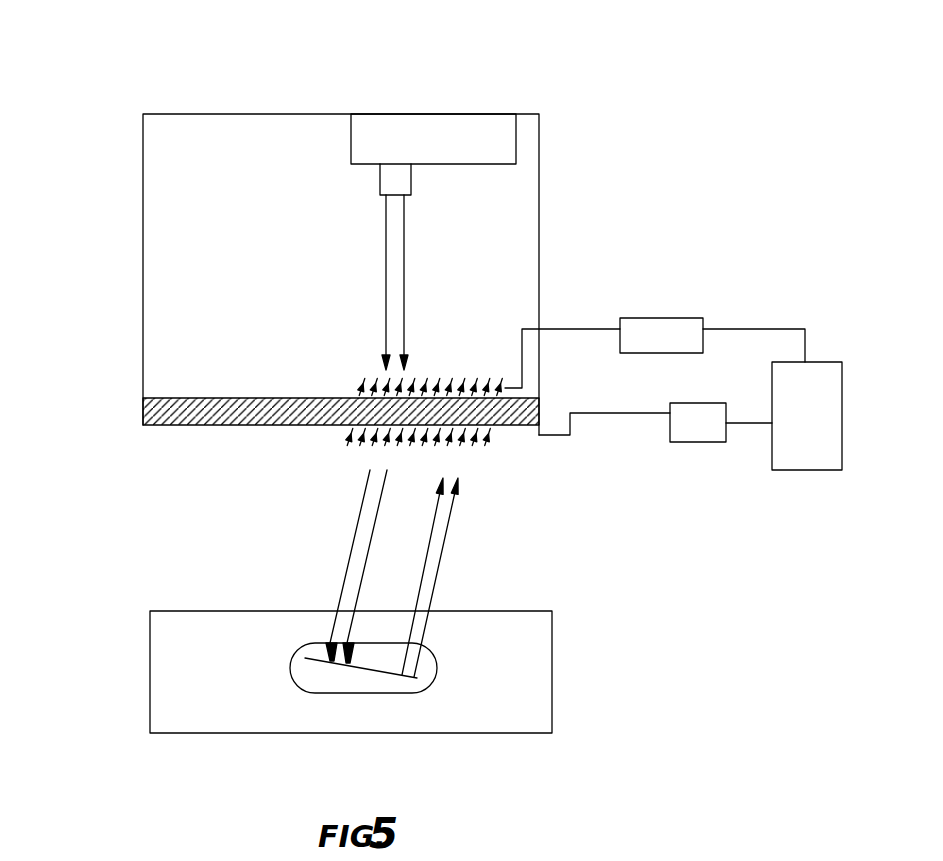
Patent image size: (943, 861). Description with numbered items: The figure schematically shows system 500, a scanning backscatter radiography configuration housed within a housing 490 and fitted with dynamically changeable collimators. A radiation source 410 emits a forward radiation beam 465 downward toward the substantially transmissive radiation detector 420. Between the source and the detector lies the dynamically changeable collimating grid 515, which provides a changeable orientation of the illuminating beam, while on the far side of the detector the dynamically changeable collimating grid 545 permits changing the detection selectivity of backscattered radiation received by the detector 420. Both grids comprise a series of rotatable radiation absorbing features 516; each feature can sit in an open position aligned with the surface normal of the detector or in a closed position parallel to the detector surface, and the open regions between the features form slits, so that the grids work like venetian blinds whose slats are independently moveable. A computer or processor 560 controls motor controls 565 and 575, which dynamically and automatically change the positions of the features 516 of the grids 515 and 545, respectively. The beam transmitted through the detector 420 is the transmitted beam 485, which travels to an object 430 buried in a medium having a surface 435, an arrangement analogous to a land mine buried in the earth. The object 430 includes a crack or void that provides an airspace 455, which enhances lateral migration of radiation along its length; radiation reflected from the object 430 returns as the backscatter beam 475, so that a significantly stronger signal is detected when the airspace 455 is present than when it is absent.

The system 500 is at (118, 46).
The housing 490 is at (143, 282).
The radiation source 410 is at (517, 151).
The forward radiation beam 465 is at (386, 280).
The substantially transmissive radiation detector 420 is at (539, 408).
The dynamically changeable collimating grid 515 is at (345, 387).
The radiation absorbing features 516 is at (348, 428).
The motor control 565 is at (648, 318).
The computer or processor 560 is at (826, 362).
The motor control 575 is at (690, 445).
The dynamically changeable collimating grid 545 is at (550, 455).
The transmitted beam 485 is at (362, 506).
The backscatter beam 475 is at (453, 502).
The surface 435 is at (448, 611).
The object 430 is at (307, 693).
The airspace 455 is at (403, 693).